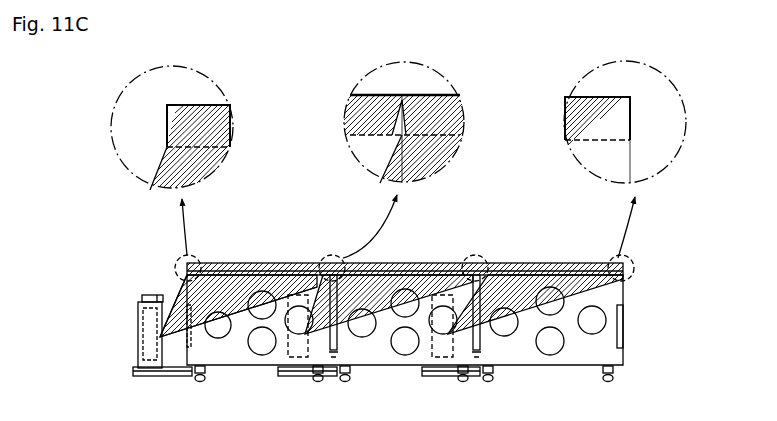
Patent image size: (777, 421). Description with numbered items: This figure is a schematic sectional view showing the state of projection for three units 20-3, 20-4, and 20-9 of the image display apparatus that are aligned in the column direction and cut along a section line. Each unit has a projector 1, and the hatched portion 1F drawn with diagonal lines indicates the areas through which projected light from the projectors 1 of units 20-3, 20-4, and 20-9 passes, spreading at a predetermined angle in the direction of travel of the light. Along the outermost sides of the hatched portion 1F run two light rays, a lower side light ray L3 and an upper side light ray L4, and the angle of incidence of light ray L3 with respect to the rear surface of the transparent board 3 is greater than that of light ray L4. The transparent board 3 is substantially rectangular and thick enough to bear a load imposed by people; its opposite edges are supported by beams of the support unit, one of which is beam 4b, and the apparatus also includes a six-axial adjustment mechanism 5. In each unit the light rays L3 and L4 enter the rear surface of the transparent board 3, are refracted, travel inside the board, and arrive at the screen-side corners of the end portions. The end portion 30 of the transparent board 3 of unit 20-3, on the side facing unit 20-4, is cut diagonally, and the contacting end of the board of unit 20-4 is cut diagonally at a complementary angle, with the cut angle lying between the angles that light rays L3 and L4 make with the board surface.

The transparent board 3 is at (166, 108).
The end portion 30 is at (401, 95).
The projector 1 is at (150, 325).
The hatched portion 1F is at (173, 294).
The upper side light ray L4 is at (170, 297).
The lower side light ray L3 is at (241, 310).
The six-axial adjustment mechanism 5 is at (163, 378).
The beam 4b is at (273, 366).
The unit 20-3 is at (238, 372).
The unit 20-4 is at (391, 372).
The unit 20-9 is at (546, 372).